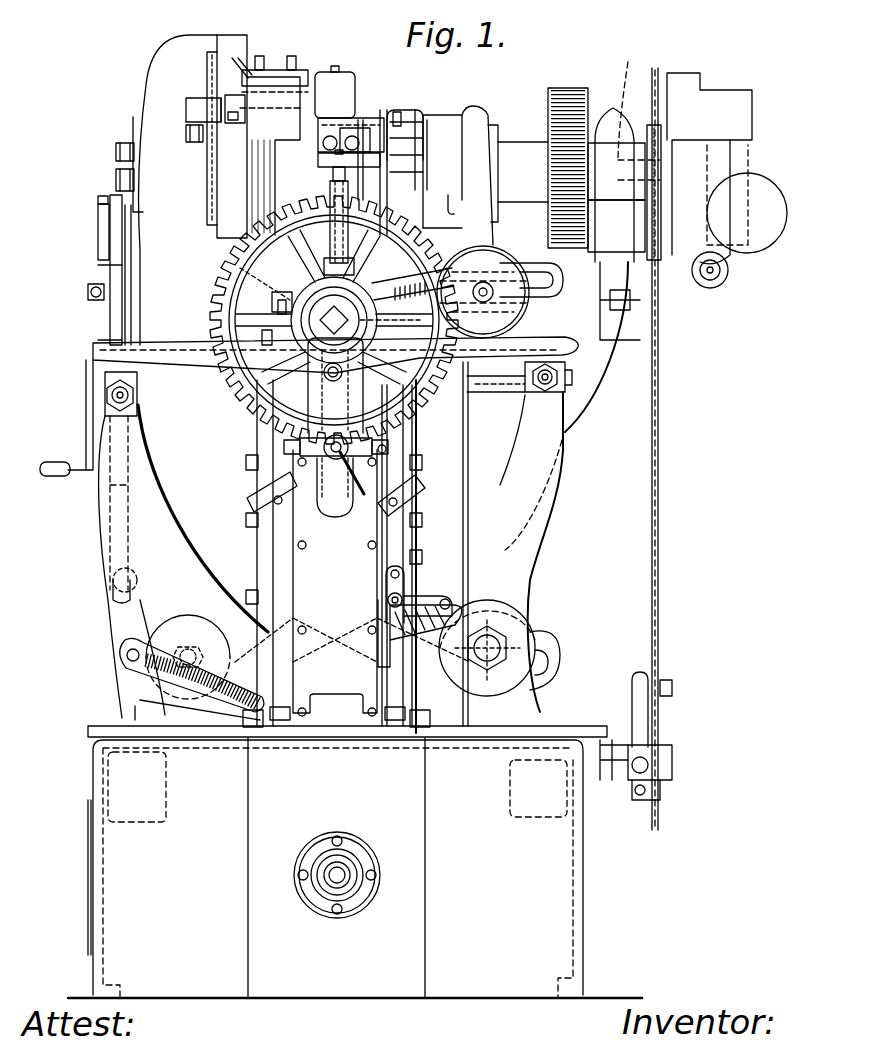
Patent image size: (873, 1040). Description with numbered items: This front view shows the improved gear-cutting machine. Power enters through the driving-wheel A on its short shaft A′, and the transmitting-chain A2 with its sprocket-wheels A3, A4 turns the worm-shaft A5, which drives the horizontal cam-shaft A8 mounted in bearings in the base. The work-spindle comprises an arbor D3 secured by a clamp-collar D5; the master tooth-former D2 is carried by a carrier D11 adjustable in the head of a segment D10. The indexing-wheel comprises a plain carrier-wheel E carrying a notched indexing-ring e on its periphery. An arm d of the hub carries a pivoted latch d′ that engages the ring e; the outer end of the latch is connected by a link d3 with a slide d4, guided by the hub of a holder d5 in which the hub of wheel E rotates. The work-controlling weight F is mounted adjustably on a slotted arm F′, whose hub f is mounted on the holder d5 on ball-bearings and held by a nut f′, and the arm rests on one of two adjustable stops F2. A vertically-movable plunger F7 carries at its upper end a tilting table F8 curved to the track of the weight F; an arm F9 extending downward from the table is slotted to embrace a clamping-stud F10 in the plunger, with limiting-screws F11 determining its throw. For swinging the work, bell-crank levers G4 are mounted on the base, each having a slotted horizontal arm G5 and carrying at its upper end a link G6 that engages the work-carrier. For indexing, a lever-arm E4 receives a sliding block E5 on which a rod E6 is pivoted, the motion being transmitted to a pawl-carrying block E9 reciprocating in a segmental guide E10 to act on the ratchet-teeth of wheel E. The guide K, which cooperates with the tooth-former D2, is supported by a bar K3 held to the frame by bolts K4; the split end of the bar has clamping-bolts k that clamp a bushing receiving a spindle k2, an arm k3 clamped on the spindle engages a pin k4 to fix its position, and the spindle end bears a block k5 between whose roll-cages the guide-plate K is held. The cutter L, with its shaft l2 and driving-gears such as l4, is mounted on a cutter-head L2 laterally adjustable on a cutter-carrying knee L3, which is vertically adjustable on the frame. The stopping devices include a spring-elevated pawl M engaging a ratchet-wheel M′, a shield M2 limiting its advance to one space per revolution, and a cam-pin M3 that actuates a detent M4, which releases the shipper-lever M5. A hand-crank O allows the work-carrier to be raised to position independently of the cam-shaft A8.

The pin k4 is at (236, 62).
The bar K3 is at (262, 70).
The clamping-bolts k is at (291, 70).
The block k5 is at (330, 80).
The guide K is at (338, 132).
The spindle k2 is at (195, 100).
The arm k3 is at (235, 80).
The bolts K4 is at (114, 178).
The cam-pin M3 is at (107, 200).
The ratchet-wheel M′ is at (97, 202).
The shield M2 is at (137, 222).
The pawl M is at (110, 243).
The detent M4 is at (123, 250).
The shipper-lever M5 is at (88, 292).
The cutter L is at (318, 160).
The latch d′ is at (330, 178).
The link d3 is at (348, 230).
The master gear-tooth or former D2 is at (366, 132).
The carrier D11 is at (390, 116).
The segment D10 is at (428, 122).
The cutter shaft l2 is at (571, 197).
The gear l4 is at (568, 96).
The cutter-head L2 is at (562, 264).
The driving-shaft A′ is at (639, 115).
The sprocket-wheel A3 is at (652, 120).
The transmitting-chain A2 is at (658, 502).
The driving-wheel A is at (698, 92).
The notched indexing-ring e is at (210, 292).
The carrier-wheel E is at (245, 318).
The arm d is at (318, 262).
The holder d5 is at (240, 272).
The slide d4 is at (290, 297).
The hub f is at (372, 290).
The nut f′ is at (380, 300).
The work-controlling weight F is at (483, 292).
The slotted arm F′ is at (545, 292).
The adjustable stops F2 is at (230, 352).
The clamp-collar D5 is at (320, 330).
The arbor D3 is at (333, 340).
The hand-crank O is at (86, 381).
The link G6 is at (130, 452).
The bell-crank levers G4 is at (143, 565).
The tilting table F8 is at (566, 360).
The cutter-carrying knee L3 is at (600, 405).
The rod E6 is at (262, 552).
The arm F9 is at (312, 403).
The limiting-screws F11 is at (305, 450).
The clamping-stud F10 is at (338, 458).
The plunger F7 is at (340, 495).
The segmental guide E10 is at (250, 495).
The pawl-carrying block E9 is at (410, 506).
The sliding block E5 is at (398, 574).
The lever-arm E4 is at (416, 598).
The slot G5 is at (133, 656).
The cam-shaft A8 is at (340, 872).
The worm-shaft A5 is at (662, 752).
The sprocket-wheel A4 is at (663, 797).